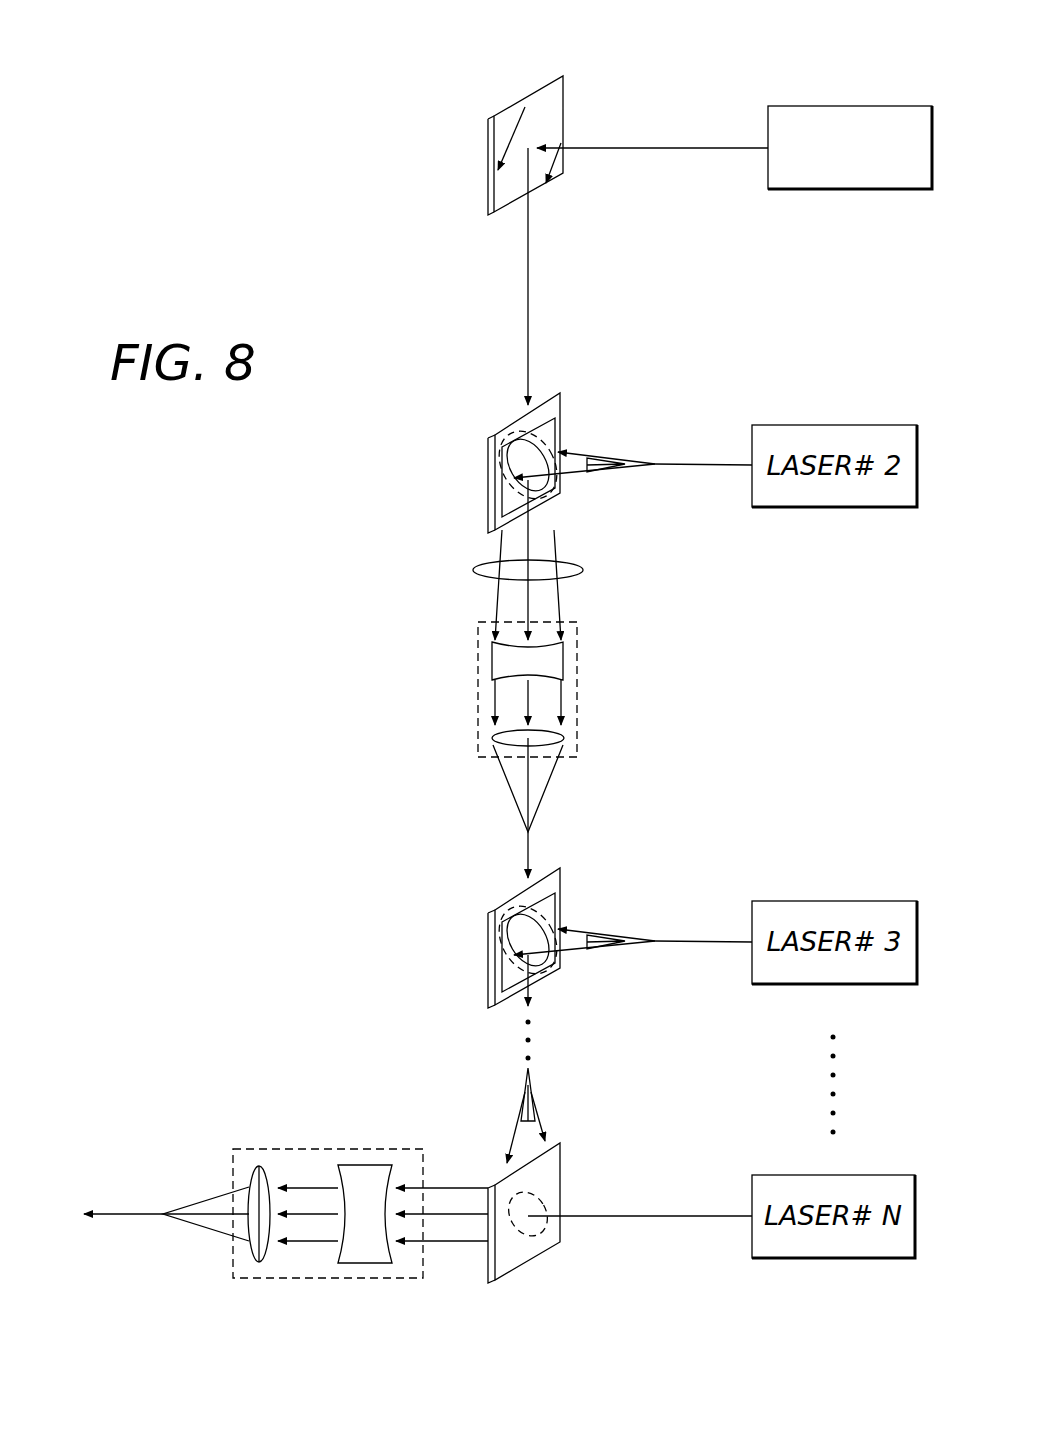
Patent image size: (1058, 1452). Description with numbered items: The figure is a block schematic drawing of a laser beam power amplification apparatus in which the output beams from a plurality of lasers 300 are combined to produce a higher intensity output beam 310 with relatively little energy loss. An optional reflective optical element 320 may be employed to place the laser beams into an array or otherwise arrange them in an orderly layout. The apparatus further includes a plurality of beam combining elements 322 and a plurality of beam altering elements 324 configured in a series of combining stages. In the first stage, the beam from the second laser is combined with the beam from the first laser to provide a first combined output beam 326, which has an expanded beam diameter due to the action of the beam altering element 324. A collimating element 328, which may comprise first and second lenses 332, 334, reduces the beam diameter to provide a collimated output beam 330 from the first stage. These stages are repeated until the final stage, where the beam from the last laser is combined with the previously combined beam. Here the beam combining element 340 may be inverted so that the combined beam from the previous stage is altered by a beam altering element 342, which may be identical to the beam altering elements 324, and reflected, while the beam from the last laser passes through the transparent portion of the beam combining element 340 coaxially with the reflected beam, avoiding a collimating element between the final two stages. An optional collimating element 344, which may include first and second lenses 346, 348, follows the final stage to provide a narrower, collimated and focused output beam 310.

The lasers 300 is at (870, 106).
The output beam 310 is at (148, 1214).
The reflective optical element 320 is at (528, 92).
The beam combining element 322 is at (511, 420).
The beam altering element 324 is at (598, 455).
The first combined output beam 326 is at (478, 566).
The collimating element 328 is at (535, 687).
The collimated output beam 330 is at (526, 852).
The first lens 332 is at (492, 658).
The second lens 334 is at (492, 738).
The beam combining element 340 is at (560, 1230).
The beam altering element 342 is at (538, 1105).
The collimating element 344 is at (305, 1192).
The first lens 346 is at (365, 1263).
The second lens 348 is at (259, 1263).